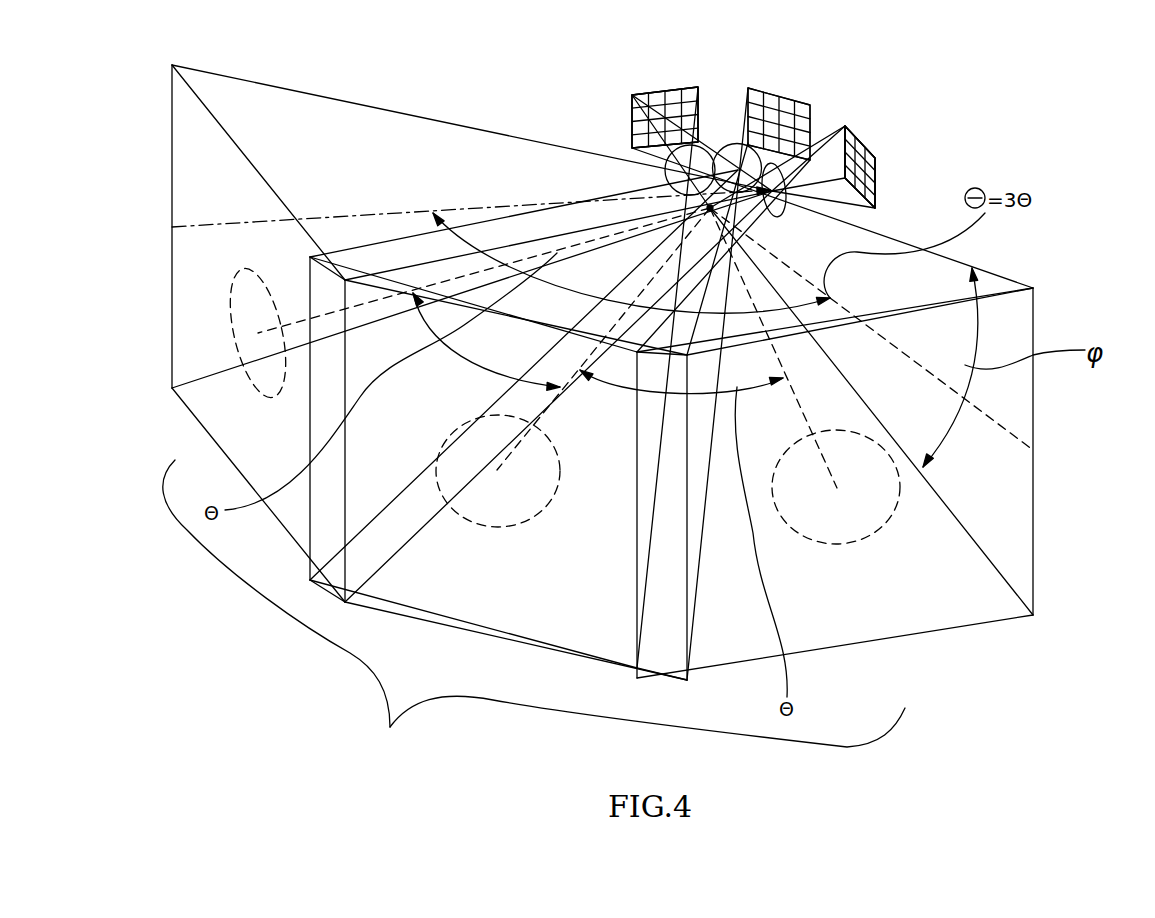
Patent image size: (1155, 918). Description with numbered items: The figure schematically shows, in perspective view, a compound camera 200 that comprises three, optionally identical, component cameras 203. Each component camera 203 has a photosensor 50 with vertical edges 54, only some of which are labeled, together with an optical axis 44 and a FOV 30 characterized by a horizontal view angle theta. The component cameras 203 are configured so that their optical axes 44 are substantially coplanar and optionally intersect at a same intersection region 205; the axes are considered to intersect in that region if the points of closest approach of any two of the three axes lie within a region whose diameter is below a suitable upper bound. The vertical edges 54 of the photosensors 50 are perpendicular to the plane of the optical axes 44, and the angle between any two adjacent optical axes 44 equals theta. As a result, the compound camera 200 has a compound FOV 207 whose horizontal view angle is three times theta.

The FOV 30 is at (243, 425).
The optical axis 44 is at (560, 250).
The photosensor 50 is at (862, 132).
The vertical edges 54 is at (632, 117).
The compound camera 200 is at (923, 142).
The component cameras 203 is at (678, 73).
The intersection region 205 is at (668, 210).
The compound FOV 207 is at (534, 611).